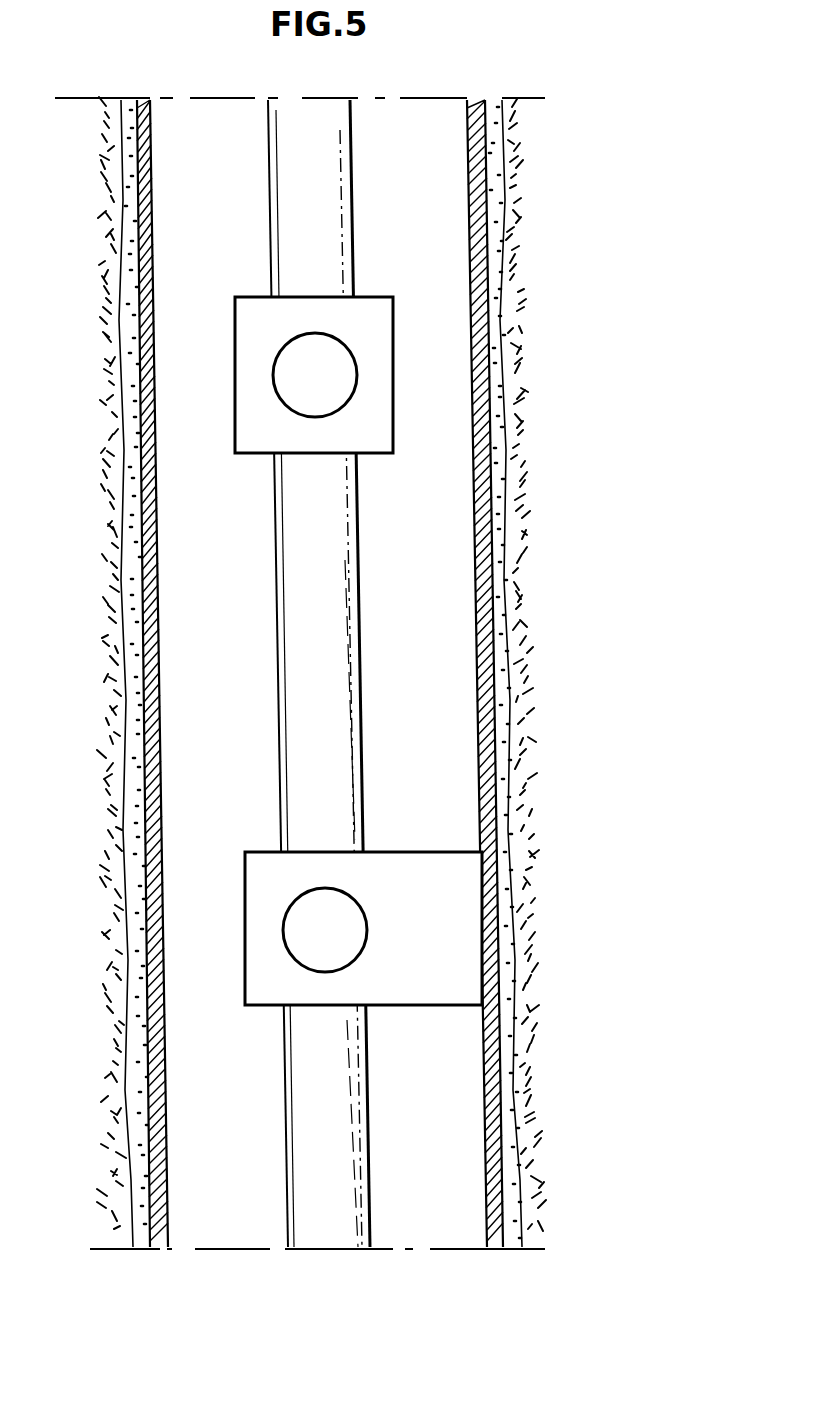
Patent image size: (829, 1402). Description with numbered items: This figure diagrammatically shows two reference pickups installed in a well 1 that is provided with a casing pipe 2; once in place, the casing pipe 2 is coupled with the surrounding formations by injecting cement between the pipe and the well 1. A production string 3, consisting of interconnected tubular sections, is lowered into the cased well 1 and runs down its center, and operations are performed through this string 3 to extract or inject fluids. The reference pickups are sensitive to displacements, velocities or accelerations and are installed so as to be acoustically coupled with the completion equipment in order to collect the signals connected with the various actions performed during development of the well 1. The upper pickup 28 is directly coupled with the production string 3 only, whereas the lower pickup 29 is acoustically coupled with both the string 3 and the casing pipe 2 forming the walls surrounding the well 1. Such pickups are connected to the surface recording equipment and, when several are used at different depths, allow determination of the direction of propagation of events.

The well 1 is at (510, 618).
The casing pipe 2 is at (460, 736).
The production string 3 is at (338, 620).
The reference pickup 28 is at (378, 418).
The reference pickup 29 is at (392, 1005).